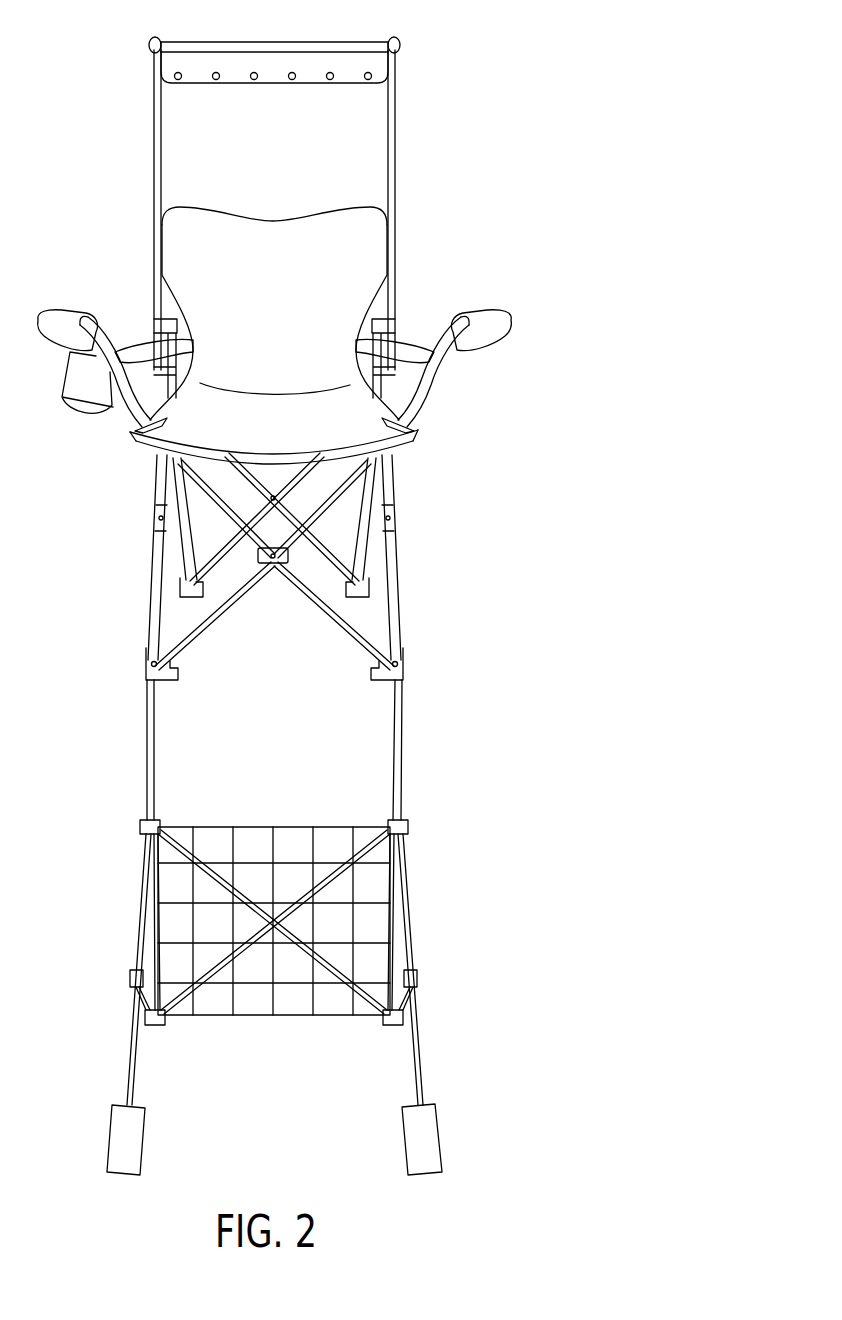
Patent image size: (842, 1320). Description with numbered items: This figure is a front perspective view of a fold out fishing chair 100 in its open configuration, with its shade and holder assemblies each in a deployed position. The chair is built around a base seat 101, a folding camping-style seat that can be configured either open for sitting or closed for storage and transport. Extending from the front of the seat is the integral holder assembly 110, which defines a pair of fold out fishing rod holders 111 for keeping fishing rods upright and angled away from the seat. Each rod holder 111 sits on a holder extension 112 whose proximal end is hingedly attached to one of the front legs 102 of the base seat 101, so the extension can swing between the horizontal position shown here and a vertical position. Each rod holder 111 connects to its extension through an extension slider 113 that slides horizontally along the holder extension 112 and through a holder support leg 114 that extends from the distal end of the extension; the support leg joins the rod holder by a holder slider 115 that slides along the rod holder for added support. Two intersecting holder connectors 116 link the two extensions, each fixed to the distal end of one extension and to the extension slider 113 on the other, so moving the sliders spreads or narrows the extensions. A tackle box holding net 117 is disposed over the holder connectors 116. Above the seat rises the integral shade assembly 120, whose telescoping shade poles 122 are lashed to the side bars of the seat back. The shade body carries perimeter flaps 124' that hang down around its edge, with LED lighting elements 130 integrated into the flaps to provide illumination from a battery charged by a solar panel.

The fold out fishing chair 100 is at (484, 474).
The base seat 101 is at (370, 405).
The front legs 102 is at (400, 613).
The holder assembly 110 is at (432, 850).
The fold out fishing rod holders 111 is at (418, 1062).
The holder extension 112 is at (399, 736).
The extension slider 113 is at (140, 827).
The holder support leg 114 is at (405, 996).
The holder slider 115 is at (418, 978).
The holder connectors 116 is at (197, 867).
The tackle box holding net 117 is at (252, 1003).
The shade assembly 120 is at (414, 87).
The telescoping shade pole 122 is at (157, 97).
The perimeter flaps 124' is at (274, 41).
The LED lighting elements 130 is at (292, 79).